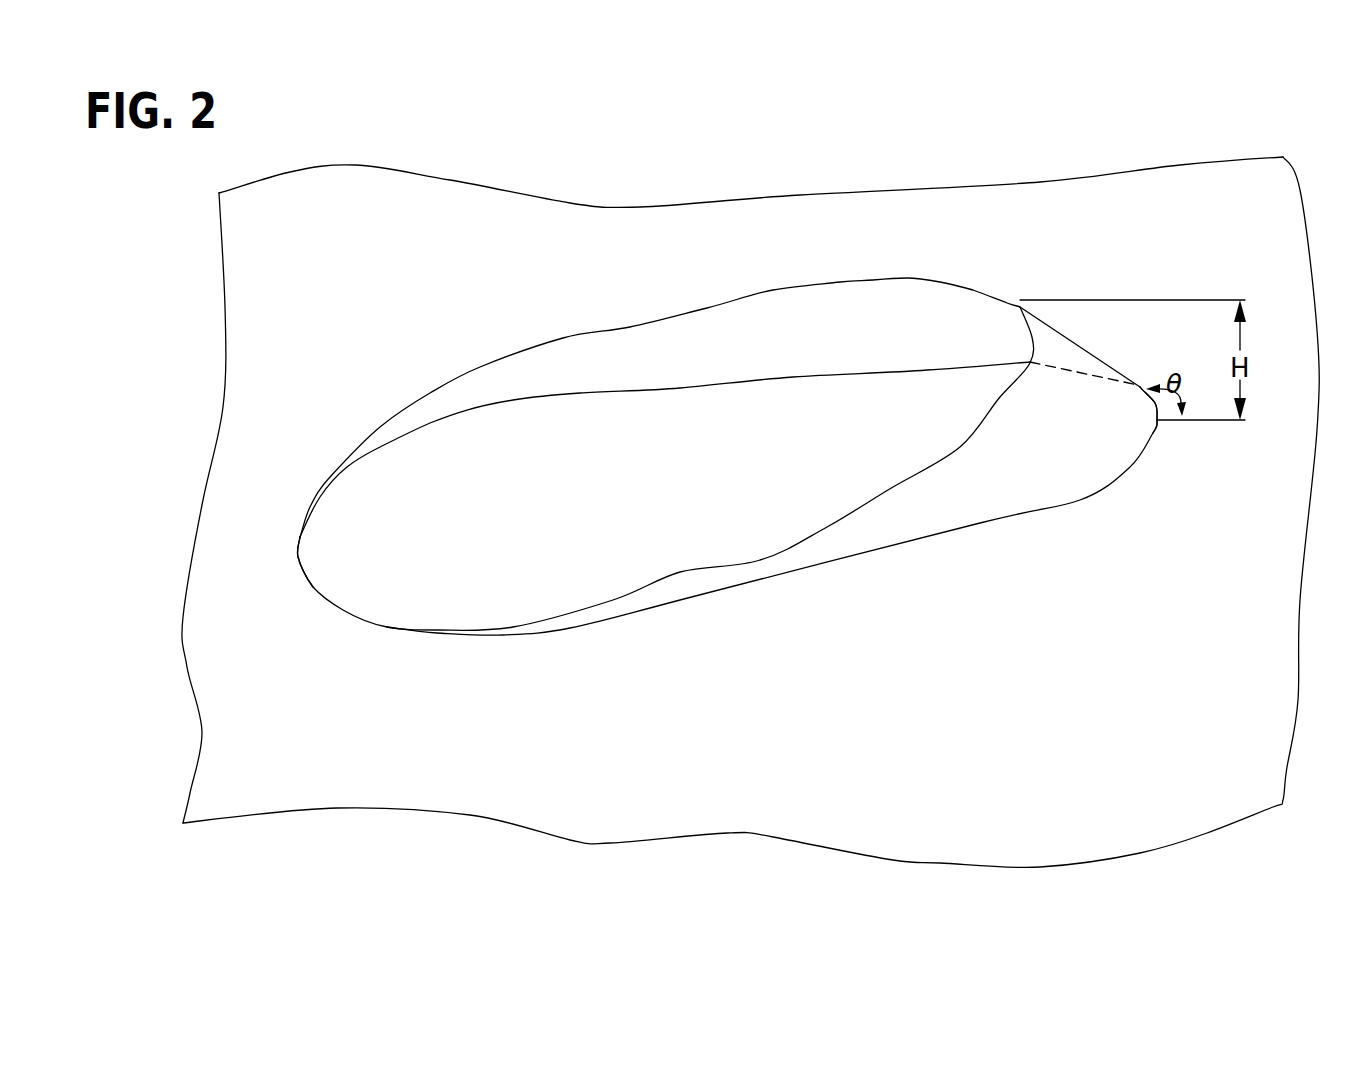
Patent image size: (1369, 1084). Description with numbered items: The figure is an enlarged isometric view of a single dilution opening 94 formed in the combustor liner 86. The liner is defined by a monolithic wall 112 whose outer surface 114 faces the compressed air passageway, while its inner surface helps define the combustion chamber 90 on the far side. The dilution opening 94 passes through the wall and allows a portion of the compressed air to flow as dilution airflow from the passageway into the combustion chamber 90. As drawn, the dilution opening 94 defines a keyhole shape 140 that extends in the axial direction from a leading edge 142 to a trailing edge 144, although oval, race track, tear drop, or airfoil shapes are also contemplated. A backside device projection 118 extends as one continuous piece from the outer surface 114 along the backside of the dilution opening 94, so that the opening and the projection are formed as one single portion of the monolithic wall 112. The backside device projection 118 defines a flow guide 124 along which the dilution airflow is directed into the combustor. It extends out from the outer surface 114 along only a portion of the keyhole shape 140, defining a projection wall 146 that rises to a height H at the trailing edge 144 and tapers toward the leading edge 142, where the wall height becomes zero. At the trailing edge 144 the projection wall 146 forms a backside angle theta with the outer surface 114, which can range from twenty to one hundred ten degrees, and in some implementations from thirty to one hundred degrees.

The combustor liner 86 is at (805, 763).
The combustion chamber 90 is at (538, 548).
The dilution opening 94 is at (685, 412).
The monolithic wall 112 is at (888, 574).
The outer surface 114 is at (358, 347).
The backside device projection 118 is at (873, 265).
The flow guide 124 is at (966, 310).
The keyhole shape 140 is at (467, 410).
The leading edge 142 is at (313, 585).
The trailing edge 144 is at (1160, 425).
The projection wall 146 is at (821, 347).